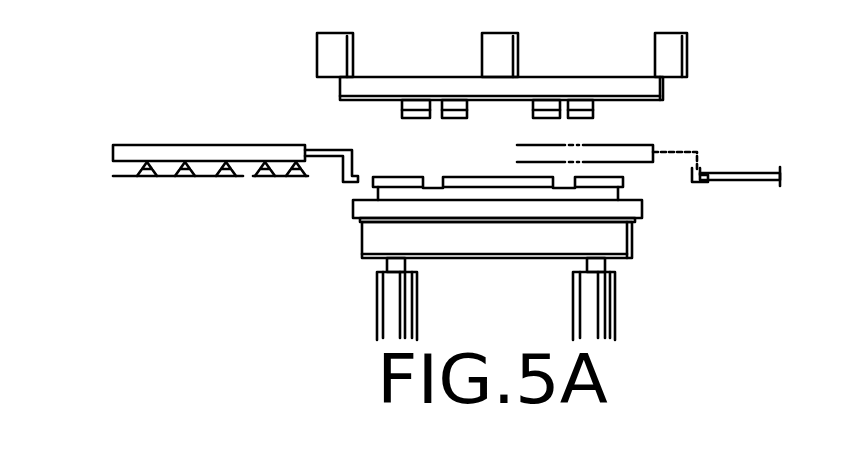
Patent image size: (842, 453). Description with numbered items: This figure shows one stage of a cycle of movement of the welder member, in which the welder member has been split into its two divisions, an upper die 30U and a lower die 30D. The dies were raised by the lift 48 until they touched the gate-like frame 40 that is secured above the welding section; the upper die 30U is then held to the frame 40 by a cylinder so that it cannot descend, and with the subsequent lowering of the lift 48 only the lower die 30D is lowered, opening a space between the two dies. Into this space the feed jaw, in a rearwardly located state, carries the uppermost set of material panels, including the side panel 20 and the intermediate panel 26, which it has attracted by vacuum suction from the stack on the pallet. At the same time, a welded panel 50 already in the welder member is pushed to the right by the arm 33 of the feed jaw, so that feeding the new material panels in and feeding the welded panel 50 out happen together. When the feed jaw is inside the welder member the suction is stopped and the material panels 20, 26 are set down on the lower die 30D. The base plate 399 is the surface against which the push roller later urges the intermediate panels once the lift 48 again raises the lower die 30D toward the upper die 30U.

The material panel 20 is at (280, 178).
The material panel 26 is at (182, 178).
The upper die 30U is at (650, 88).
The lower die 30D is at (615, 238).
The arm 33 is at (342, 180).
The frame 40 is at (672, 53).
The lift 48 is at (592, 293).
The welded panel 50 is at (748, 183).
The base plate 399 is at (407, 187).